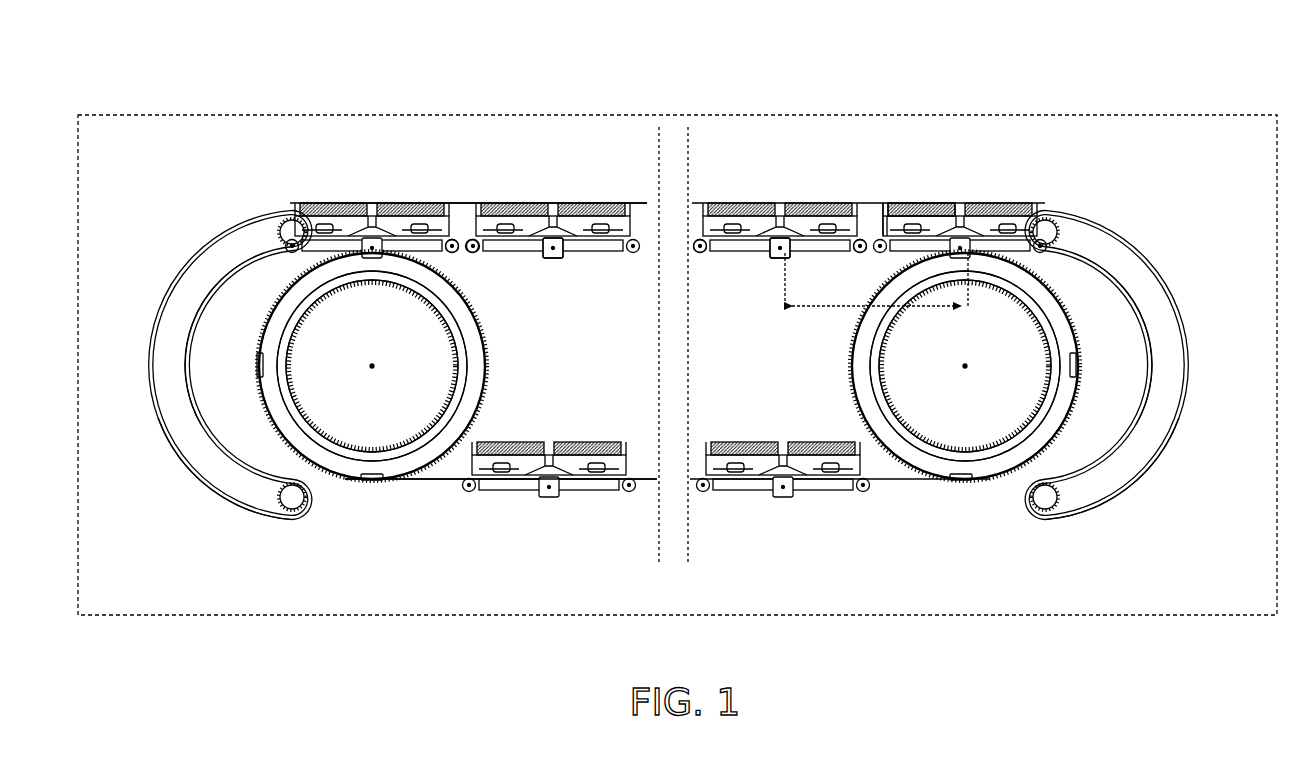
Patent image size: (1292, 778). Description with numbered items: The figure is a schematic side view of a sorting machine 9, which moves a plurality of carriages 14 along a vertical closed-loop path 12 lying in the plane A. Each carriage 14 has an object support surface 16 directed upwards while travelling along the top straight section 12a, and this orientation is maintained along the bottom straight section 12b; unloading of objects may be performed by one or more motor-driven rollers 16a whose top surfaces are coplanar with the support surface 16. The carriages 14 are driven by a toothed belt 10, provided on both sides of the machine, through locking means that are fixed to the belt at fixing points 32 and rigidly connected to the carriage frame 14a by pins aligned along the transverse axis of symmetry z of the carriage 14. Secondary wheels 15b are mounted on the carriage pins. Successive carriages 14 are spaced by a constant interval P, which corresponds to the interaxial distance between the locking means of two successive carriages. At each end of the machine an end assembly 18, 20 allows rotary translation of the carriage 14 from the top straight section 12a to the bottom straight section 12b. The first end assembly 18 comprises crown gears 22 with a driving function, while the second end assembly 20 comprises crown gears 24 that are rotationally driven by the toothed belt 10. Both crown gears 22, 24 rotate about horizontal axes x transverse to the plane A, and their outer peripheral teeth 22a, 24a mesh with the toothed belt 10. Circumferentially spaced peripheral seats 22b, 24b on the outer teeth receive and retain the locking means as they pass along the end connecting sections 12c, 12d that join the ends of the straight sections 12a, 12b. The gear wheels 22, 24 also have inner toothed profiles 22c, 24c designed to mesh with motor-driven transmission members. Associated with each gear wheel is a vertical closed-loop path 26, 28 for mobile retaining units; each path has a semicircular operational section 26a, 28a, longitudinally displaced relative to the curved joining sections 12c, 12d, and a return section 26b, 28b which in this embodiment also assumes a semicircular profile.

The plane A is at (213, 110).
The sorting machine 9 is at (758, 176).
The toothed belt 10 is at (652, 240).
The closed-loop path 12 is at (412, 488).
The top straight section 12a is at (441, 233).
The bottom straight section 12b is at (446, 484).
The end connecting section 12c is at (271, 431).
The end connecting section 12d is at (1076, 430).
The carriage 14 is at (846, 199).
The carriage frame 14a is at (590, 251).
The secondary wheel 15b is at (458, 206).
The object support surface 16 is at (924, 197).
The motor-driven roller 16a is at (946, 200).
The first end assembly 18 is at (994, 486).
The second end assembly 20 is at (357, 489).
The crown gear 22 is at (1061, 313).
The outer peripheral teeth 22a is at (851, 396).
The peripheral seat 22b is at (851, 360).
The inner toothed profile 22c is at (966, 446).
The crown gear 24 is at (268, 316).
The outer peripheral teeth 24a is at (490, 396).
The peripheral seat 24b is at (491, 346).
The inner toothed profile 24c is at (377, 446).
The vertical closed-loop path 26 is at (1160, 226).
The semicircular section 26a is at (1164, 330).
The return section 26b is at (1168, 470).
The vertical closed-loop path 28 is at (186, 262).
The semicircular section 28a is at (185, 336).
The return section 28b is at (185, 470).
The fixing point 32 is at (779, 256).
The interval P is at (889, 306).
The rotation axis x is at (372, 364).
The transverse axis of symmetry z is at (556, 256).